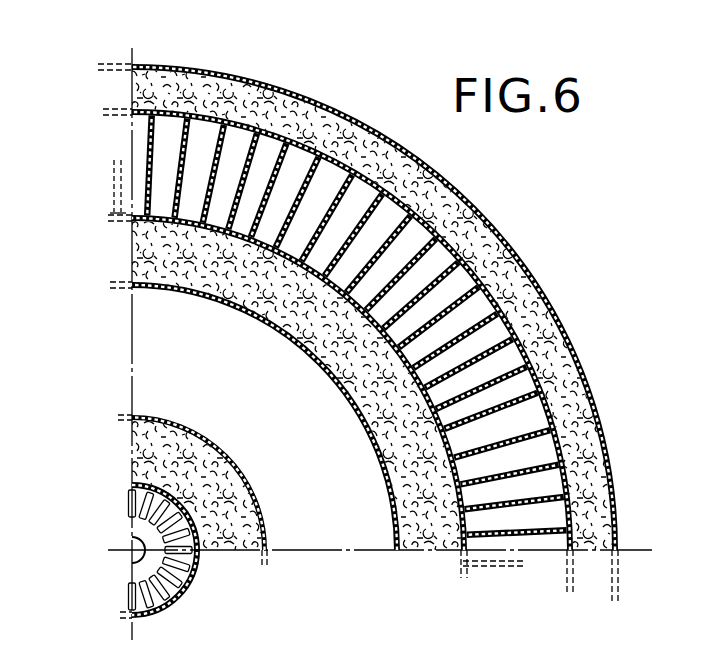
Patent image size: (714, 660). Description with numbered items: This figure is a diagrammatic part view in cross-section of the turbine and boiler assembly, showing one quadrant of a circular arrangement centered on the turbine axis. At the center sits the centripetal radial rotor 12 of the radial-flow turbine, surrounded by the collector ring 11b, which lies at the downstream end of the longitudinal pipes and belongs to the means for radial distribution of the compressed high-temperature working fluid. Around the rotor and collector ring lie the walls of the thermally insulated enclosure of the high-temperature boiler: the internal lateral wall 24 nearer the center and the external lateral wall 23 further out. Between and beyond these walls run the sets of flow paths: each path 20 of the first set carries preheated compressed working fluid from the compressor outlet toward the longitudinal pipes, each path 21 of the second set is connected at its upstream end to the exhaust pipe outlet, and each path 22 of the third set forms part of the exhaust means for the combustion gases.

The path of the first set of paths 20 is at (472, 272).
The path of the second set of paths 21 is at (510, 320).
The path of the third set of paths 22 is at (492, 297).
The external lateral wall 23 is at (152, 242).
The internal lateral wall 24 is at (140, 444).
The centripetal radial rotor 12 is at (140, 522).
The collector ring 11b is at (298, 442).